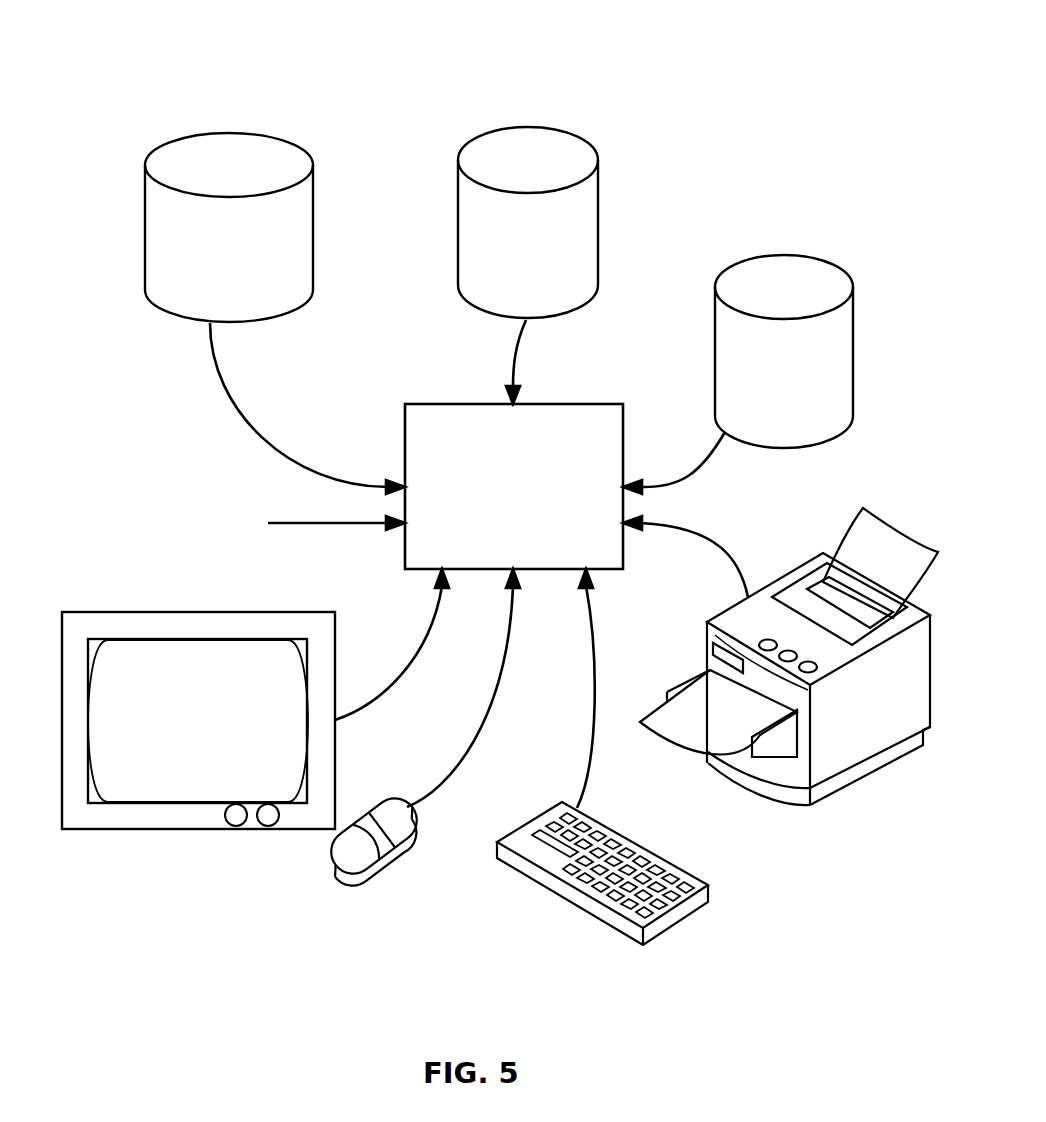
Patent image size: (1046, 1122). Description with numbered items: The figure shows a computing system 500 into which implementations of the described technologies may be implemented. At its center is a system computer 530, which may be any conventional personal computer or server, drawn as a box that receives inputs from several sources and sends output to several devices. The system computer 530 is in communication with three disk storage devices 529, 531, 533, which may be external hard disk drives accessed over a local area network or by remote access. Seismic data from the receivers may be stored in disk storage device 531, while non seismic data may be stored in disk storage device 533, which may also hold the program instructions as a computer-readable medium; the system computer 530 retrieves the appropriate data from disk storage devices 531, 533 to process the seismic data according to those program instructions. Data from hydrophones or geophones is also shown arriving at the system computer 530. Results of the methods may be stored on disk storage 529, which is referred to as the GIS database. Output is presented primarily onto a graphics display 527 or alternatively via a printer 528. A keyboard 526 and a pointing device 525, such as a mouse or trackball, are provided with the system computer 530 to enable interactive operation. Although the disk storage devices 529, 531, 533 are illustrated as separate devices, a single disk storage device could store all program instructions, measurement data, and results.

The computing system 500 is at (892, 35).
The pointing device 525 is at (348, 885).
The keyboard 526 is at (662, 930).
The graphics display 527 is at (197, 830).
The printer 528 is at (830, 797).
The disk storage device 529 is at (782, 253).
The system computer 530 is at (550, 404).
The disk storage device 531 is at (578, 131).
The disk storage device 533 is at (248, 133).